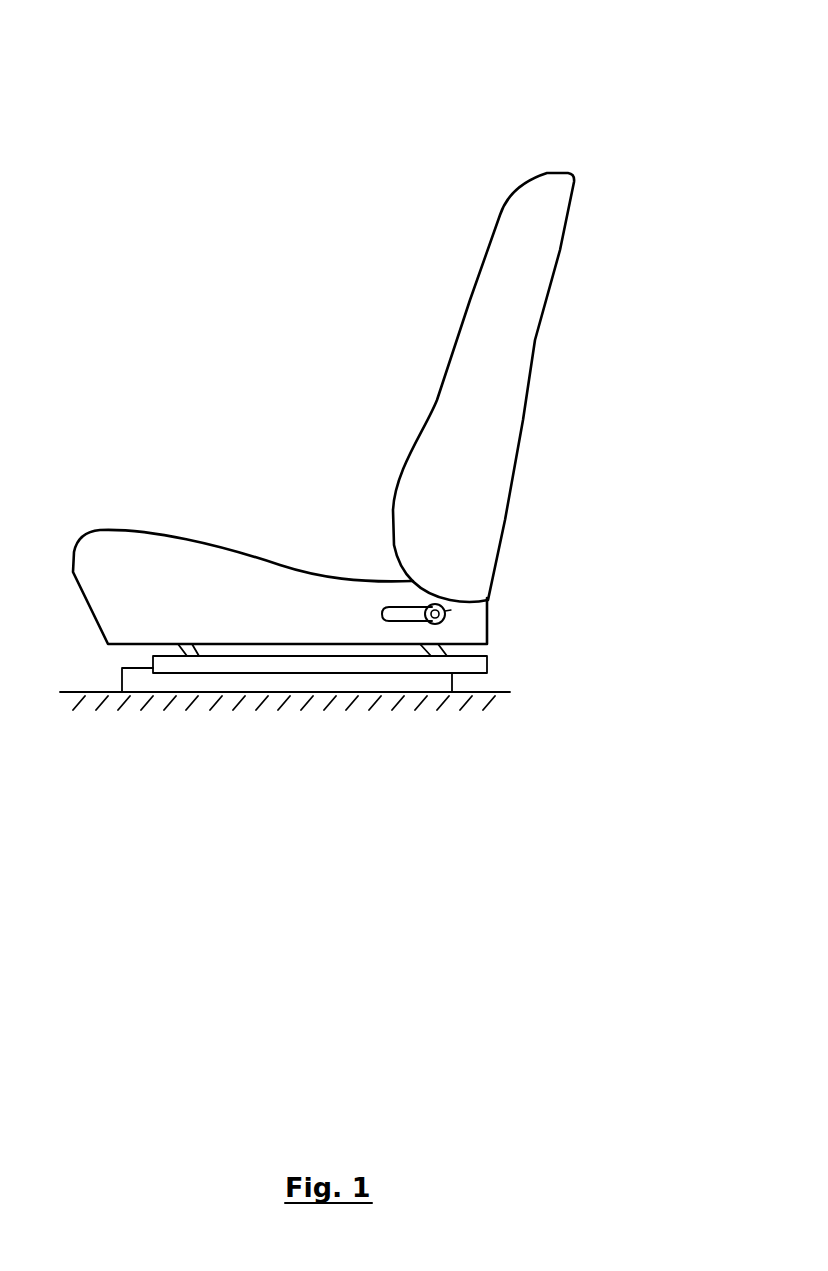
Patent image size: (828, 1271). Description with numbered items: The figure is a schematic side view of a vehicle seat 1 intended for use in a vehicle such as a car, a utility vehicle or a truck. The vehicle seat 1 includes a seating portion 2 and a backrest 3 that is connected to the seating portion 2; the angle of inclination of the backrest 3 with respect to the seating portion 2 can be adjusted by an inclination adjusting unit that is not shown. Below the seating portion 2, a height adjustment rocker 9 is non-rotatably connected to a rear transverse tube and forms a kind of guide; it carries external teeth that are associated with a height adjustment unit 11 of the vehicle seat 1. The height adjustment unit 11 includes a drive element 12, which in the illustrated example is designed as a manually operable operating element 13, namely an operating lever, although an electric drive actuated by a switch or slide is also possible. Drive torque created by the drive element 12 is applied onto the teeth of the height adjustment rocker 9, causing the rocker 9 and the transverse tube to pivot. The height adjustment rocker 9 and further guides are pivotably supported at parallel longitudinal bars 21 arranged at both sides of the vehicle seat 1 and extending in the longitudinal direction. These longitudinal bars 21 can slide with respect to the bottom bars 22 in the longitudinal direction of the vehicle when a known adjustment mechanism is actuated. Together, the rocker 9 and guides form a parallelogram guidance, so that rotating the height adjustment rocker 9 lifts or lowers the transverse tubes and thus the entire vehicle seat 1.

The vehicle seat 1 is at (367, 130).
The seating portion 2 is at (233, 588).
The backrest 3 is at (499, 373).
The height adjustment rocker 9 is at (445, 648).
The height adjustment unit 11 is at (398, 601).
The drive element 12 is at (416, 614).
The manually operable operating element 13 is at (416, 614).
The longitudinal bars 21 is at (348, 664).
The bottom bars 22 is at (272, 683).